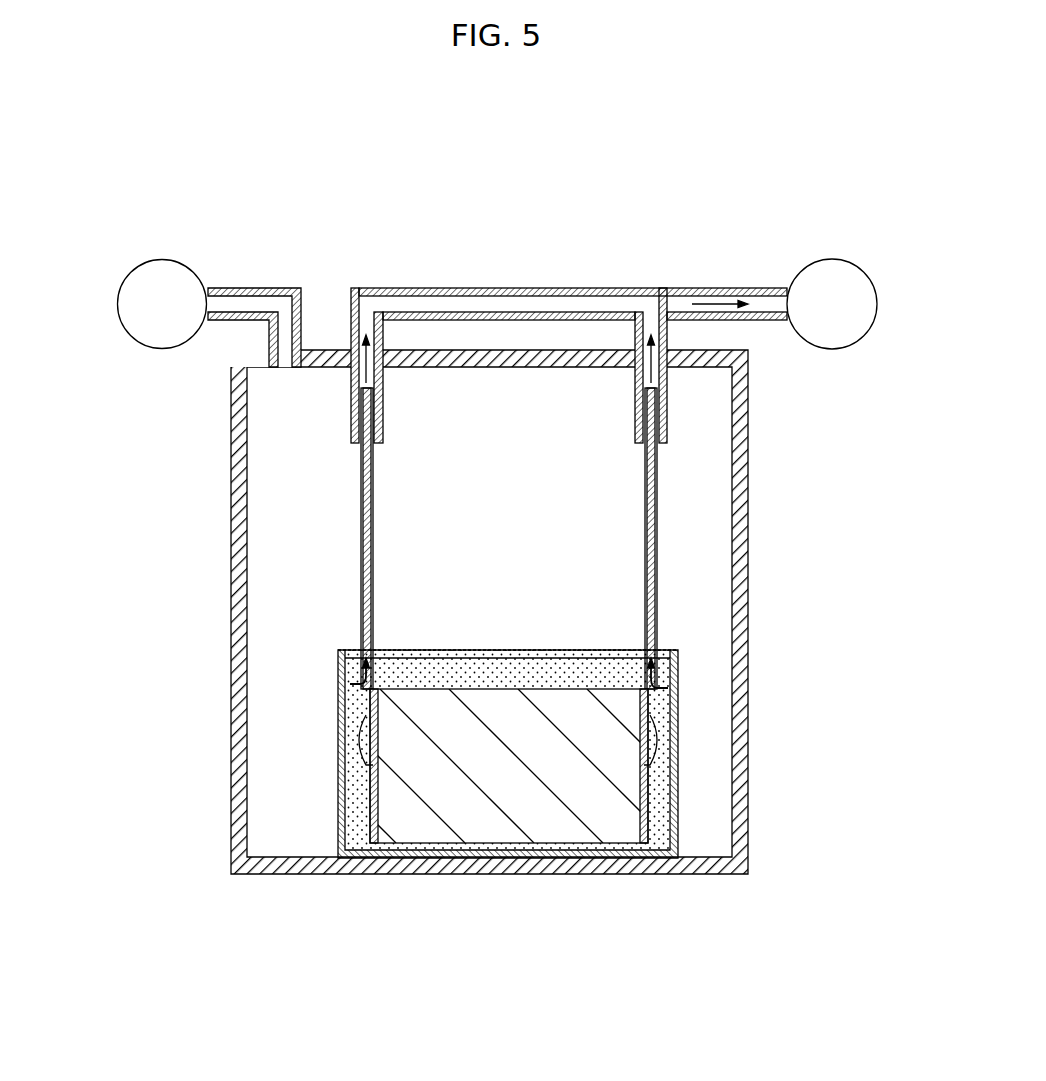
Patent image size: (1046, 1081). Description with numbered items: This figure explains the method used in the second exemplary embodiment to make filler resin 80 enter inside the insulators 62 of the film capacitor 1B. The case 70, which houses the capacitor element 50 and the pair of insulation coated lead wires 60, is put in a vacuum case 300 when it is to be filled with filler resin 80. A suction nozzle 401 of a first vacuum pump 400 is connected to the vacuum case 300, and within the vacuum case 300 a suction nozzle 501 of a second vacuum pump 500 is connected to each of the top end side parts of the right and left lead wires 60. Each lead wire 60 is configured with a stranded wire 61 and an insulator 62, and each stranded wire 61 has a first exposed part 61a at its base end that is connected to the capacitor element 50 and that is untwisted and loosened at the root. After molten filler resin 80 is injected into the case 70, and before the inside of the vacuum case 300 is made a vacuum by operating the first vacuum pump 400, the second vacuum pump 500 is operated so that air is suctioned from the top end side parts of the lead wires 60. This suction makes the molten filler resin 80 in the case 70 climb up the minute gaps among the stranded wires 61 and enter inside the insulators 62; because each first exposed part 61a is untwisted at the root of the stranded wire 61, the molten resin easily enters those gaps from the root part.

The film capacitor 1B is at (526, 716).
The capacitor element 50 is at (540, 688).
The insulation coated lead wire 60 is at (357, 540).
The stranded wire 61 is at (373, 550).
The first exposed part 61a is at (363, 713).
The insulator 62 is at (375, 503).
The case 70 is at (679, 790).
The filler resin 80 is at (497, 670).
The vacuum case 300 is at (230, 508).
The first vacuum pump 400 is at (117, 300).
The suction nozzle 401 is at (252, 288).
The second vacuum pump 500 is at (878, 300).
The suction nozzle 501 is at (538, 288).